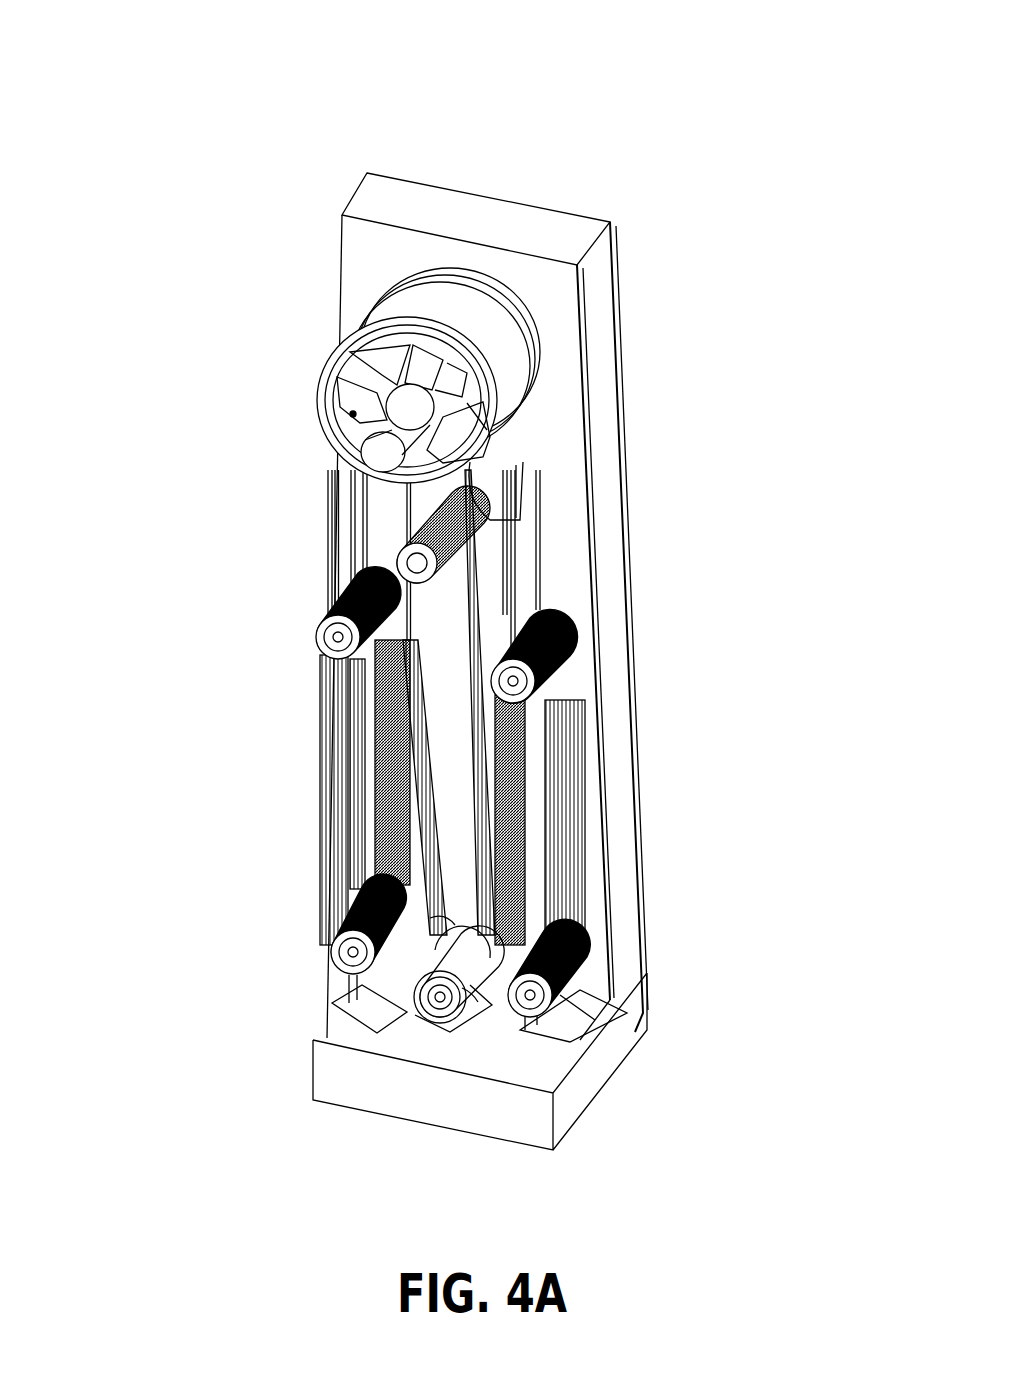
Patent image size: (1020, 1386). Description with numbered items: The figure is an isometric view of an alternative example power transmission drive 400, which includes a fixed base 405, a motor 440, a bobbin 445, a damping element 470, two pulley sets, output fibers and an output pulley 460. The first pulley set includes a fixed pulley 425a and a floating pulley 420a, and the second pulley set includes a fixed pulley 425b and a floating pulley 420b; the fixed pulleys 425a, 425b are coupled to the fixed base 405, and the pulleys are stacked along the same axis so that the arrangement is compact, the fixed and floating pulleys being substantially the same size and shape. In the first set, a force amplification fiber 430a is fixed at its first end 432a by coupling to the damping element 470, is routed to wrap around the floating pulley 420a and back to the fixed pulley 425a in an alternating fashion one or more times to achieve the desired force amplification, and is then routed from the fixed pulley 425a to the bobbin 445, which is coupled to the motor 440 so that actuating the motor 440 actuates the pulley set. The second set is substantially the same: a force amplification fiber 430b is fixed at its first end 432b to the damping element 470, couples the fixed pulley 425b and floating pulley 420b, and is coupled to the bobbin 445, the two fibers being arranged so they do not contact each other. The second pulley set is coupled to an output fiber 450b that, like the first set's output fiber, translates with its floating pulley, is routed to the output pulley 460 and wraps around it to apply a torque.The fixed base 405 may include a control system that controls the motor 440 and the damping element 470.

The power transmission drive 400 is at (262, 11).
The fixed base 405 is at (365, 245).
The floating pulley 420a is at (323, 606).
The floating pulley 420b is at (558, 634).
The fixed pulley 425a is at (342, 952).
The fixed pulley 425b is at (540, 978).
The force amplification fiber 430a is at (332, 763).
The force amplification fiber 430b is at (567, 806).
The first end 432a is at (440, 923).
The first end 432b is at (470, 995).
The motor 440 is at (523, 492).
The bobbin 445 is at (418, 568).
The output fiber 450b is at (683, 232).
The output pulley 460 is at (423, 302).
The damping element 470 is at (440, 997).